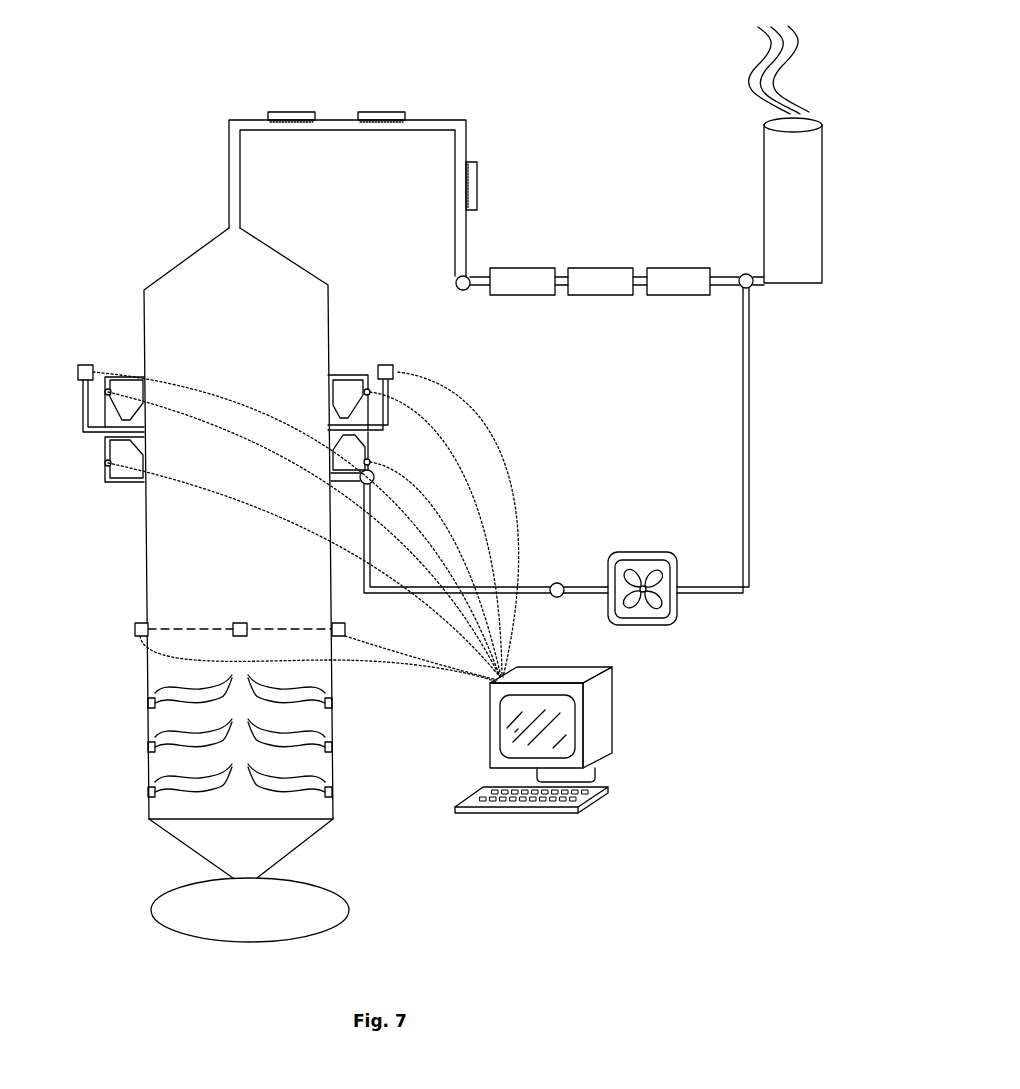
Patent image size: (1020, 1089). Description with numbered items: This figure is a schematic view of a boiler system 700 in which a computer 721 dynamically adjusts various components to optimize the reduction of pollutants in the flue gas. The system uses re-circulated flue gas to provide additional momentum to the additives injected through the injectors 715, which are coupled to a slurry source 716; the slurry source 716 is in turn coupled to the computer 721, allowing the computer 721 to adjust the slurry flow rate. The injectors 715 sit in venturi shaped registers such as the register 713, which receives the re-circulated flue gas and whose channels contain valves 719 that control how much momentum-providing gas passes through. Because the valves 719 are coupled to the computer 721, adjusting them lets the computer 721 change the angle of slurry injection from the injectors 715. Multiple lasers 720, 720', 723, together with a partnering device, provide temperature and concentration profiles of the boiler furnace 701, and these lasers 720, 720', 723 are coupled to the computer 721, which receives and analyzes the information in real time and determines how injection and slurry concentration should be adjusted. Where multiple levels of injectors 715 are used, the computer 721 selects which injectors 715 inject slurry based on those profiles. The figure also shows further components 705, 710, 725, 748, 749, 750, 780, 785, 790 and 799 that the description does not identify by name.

The boiler system 700 is at (82, 166).
The boiler furnace 701 is at (224, 327).
The fuel supply 705 is at (234, 919).
The burners 710 is at (143, 795).
The register 713 is at (142, 358).
The injectors 715 is at (150, 429).
The slurry source 716 is at (84, 365).
The valves 719 is at (105, 393).
The laser 720 is at (118, 609).
The laser 720' is at (370, 621).
The computer 721 is at (598, 720).
The laser 723 is at (240, 622).
The heater 725 is at (290, 110).
The valve 748 is at (467, 291).
The valve 749 is at (557, 598).
The treatment units 750 is at (710, 262).
The valve 780 is at (746, 273).
The fan 785 is at (643, 552).
The stack 790 is at (763, 172).
The exhaust duct 799 is at (228, 173).